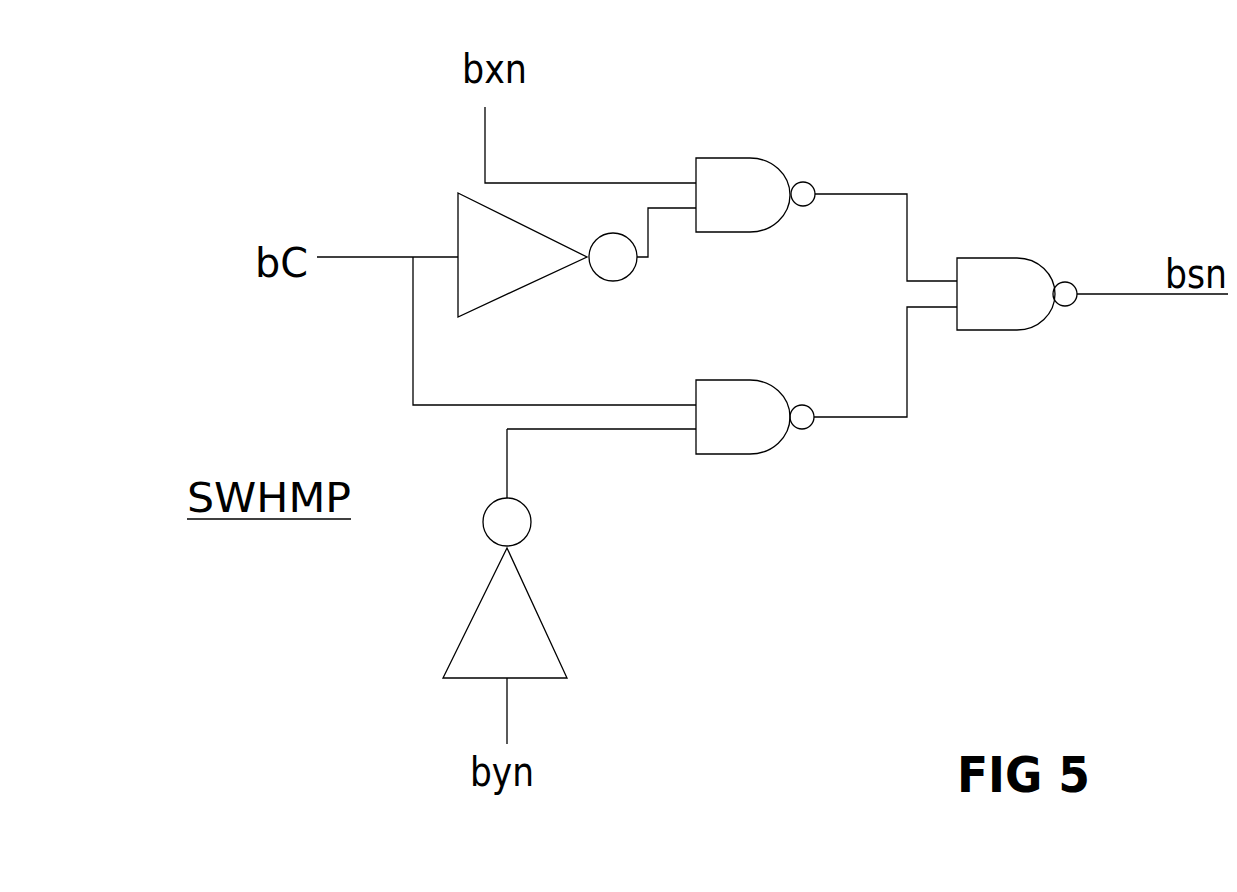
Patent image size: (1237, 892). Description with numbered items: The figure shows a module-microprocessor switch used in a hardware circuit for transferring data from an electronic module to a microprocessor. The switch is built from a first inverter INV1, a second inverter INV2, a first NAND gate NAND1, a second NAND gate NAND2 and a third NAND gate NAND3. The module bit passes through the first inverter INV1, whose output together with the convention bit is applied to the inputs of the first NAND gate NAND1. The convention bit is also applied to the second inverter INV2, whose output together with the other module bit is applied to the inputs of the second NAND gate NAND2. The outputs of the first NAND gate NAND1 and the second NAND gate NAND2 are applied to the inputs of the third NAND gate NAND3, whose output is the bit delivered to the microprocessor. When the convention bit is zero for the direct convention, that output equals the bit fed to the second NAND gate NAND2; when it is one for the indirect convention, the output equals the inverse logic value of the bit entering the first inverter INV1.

The first inverter INV1 is at (555, 646).
The second inverter INV2 is at (458, 210).
The first NAND gate NAND1 is at (740, 440).
The second NAND gate NAND2 is at (750, 170).
The third NAND gate NAND3 is at (1002, 315).